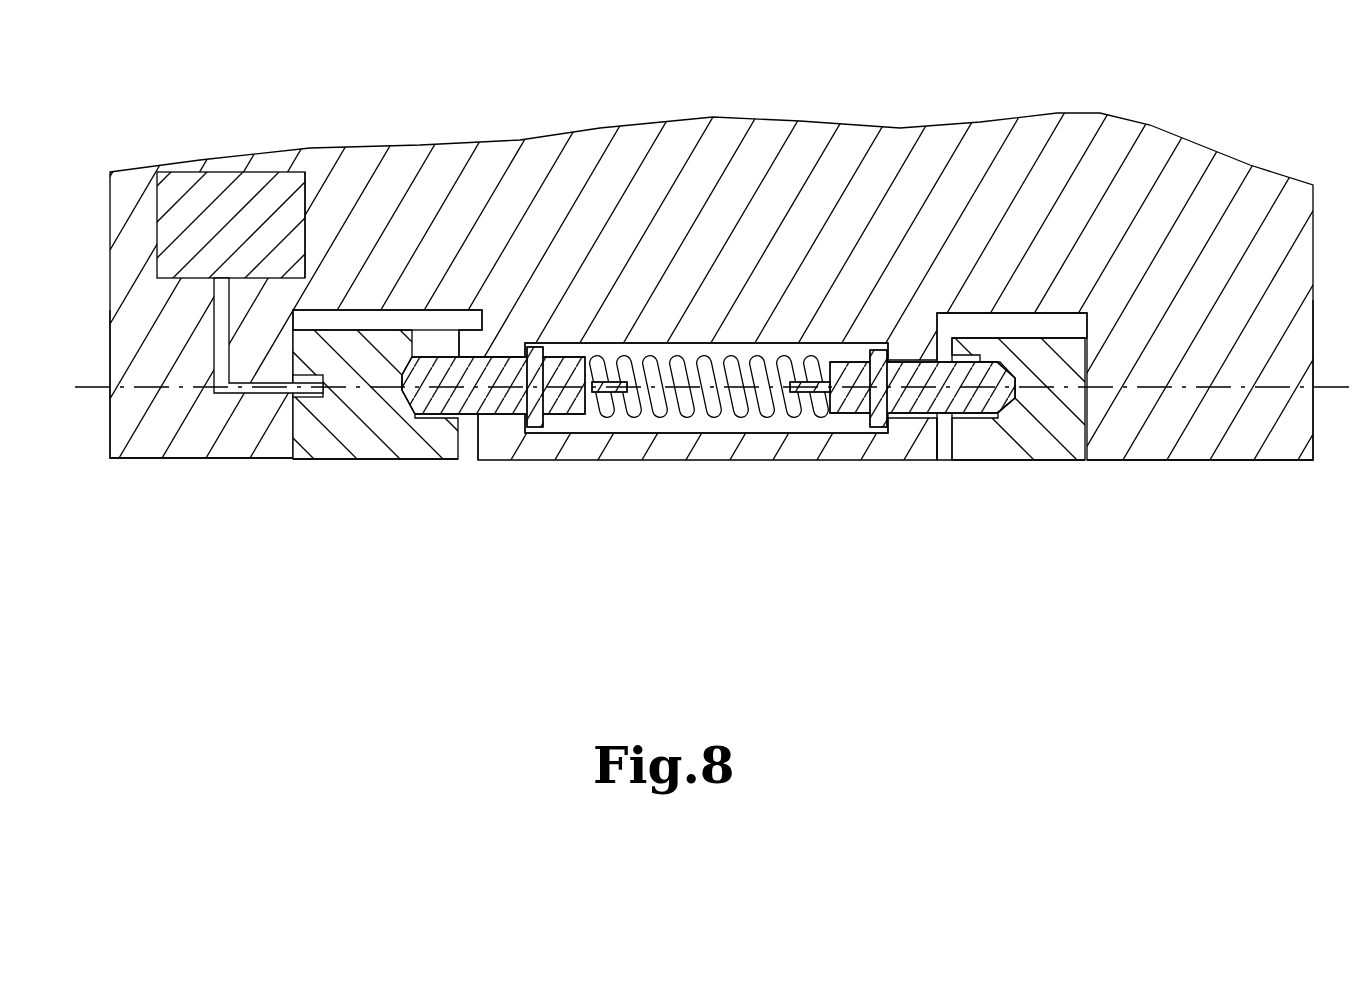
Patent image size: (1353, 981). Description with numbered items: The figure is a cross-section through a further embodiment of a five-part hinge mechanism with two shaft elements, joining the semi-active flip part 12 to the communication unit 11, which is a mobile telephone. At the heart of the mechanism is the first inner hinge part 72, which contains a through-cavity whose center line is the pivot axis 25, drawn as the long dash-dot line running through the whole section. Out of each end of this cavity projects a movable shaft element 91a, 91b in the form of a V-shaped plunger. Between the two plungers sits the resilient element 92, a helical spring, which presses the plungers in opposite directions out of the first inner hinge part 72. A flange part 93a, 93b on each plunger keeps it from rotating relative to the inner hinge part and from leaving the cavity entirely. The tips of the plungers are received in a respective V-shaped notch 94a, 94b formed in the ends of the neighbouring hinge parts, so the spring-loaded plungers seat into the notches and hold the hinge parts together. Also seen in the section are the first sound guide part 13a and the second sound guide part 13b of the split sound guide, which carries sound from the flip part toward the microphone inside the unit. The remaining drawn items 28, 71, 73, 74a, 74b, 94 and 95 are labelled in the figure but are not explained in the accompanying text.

The communication unit 11 is at (106, 222).
The semi-active flip part 12 is at (419, 472).
The first sound guide part 13a is at (315, 375).
The second sound guide part 13b is at (223, 362).
The pivot axis 25 is at (1347, 405).
The block 28 is at (200, 205).
The left housing portion 71 is at (128, 458).
The first inner hinge part 72 is at (1200, 462).
The middle housing portion 73 is at (694, 460).
The left bearing body 74a is at (360, 459).
The right bearing body 74b is at (1022, 462).
The movable shaft element 91a is at (483, 410).
The movable shaft element 91b is at (905, 420).
The resilient element 92 is at (757, 365).
The flange part 93a is at (530, 347).
The flange part 93b is at (877, 352).
The spring rod 94 is at (635, 360).
The V-shaped notch 94a is at (452, 340).
The V-shaped notch 94b is at (965, 352).
The gap 95 is at (306, 245).